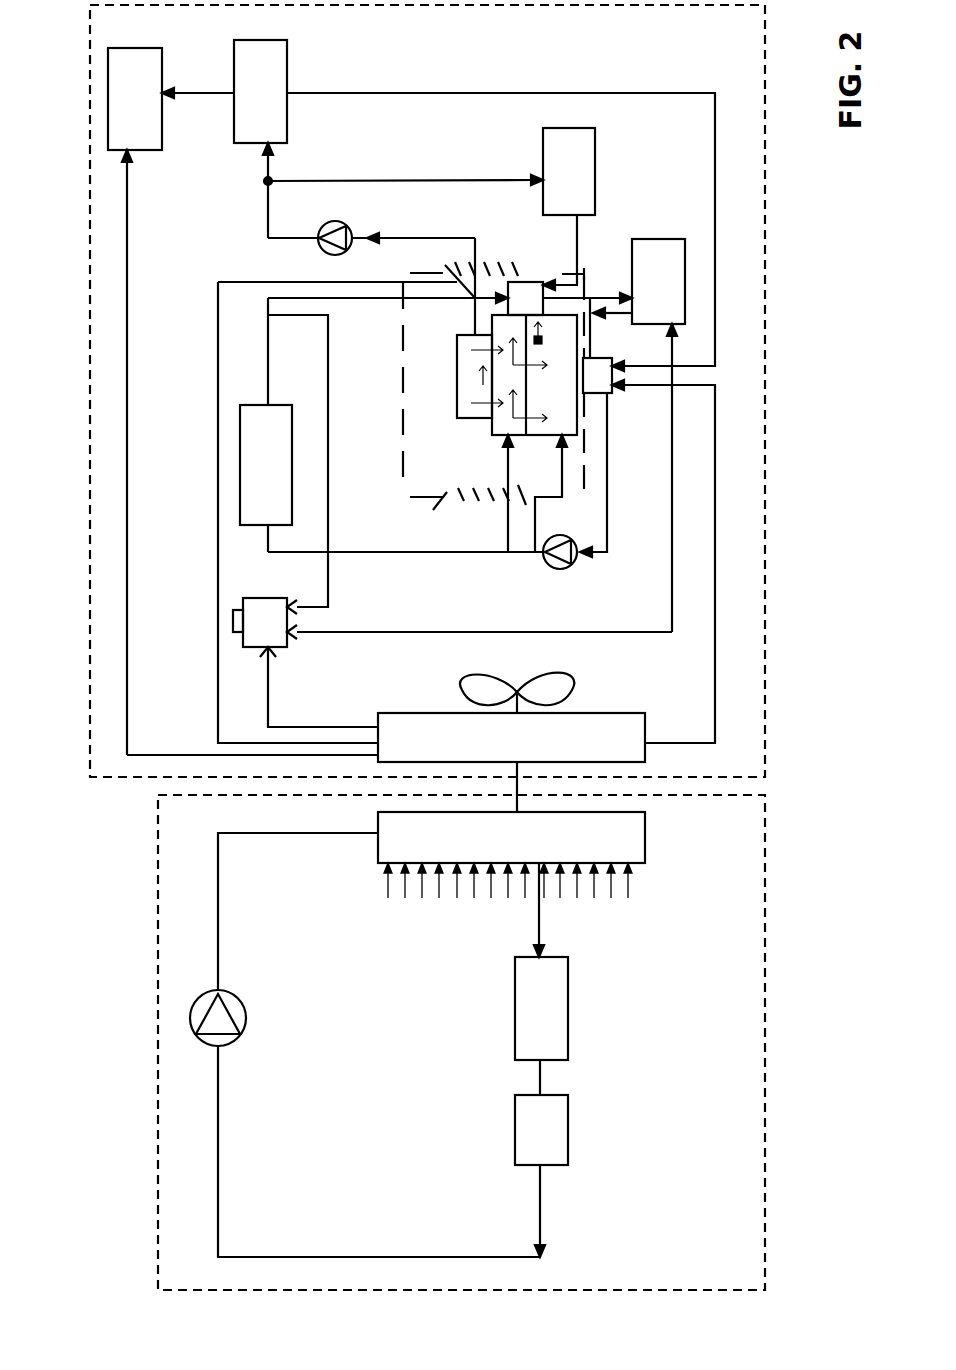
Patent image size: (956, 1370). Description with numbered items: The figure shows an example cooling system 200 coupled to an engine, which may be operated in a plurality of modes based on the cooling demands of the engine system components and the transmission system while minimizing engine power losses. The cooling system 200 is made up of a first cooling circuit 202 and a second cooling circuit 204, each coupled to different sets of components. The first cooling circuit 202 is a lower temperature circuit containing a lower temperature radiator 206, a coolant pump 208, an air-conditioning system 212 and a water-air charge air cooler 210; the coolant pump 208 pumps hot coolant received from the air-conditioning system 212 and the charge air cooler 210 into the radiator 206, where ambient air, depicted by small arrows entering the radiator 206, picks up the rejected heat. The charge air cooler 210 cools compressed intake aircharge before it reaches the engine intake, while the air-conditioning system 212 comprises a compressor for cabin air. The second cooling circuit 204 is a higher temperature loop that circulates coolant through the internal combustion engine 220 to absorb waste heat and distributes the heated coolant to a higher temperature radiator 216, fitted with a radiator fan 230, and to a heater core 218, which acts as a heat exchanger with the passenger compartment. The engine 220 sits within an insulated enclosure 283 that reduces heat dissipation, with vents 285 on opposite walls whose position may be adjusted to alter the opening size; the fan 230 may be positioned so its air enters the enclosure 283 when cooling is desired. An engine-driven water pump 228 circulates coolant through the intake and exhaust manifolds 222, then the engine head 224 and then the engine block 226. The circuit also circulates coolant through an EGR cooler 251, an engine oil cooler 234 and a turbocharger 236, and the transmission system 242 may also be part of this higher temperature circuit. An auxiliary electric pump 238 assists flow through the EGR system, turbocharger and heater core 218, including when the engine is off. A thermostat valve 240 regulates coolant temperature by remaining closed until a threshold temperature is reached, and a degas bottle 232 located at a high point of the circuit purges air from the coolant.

The cooling system 200 is at (62, 92).
The first cooling circuit 202 is at (158, 965).
The second cooling circuit 204 is at (90, 500).
The lower temperature radiator 206 is at (431, 1034).
The coolant pump 208 is at (196, 998).
The water-air charge air cooler 210 is at (541, 1026).
The air-conditioning system 212 is at (541, 1176).
The higher temperature radiator 216 is at (466, 547).
The heater core 218 is at (438, 205).
The internal combustion engine 220 is at (498, 383).
The intake and exhaust manifolds 222 is at (472, 420).
The engine head 224 is at (497, 437).
The engine block 226 is at (550, 438).
The engine-driven water pump 228 is at (566, 564).
The radiator fan 230 is at (548, 703).
The degas bottle 232 is at (266, 598).
The oil cooler 234 is at (491, 435).
The turbocharger 236 is at (569, 209).
The auxiliary electric pump 238 is at (321, 229).
The thermostat valve 240 is at (610, 393).
The transmission system 242 is at (243, 401).
The EGR cooler 251 is at (374, 450).
The insulated enclosure 283 is at (402, 407).
The vents 285 is at (512, 267).